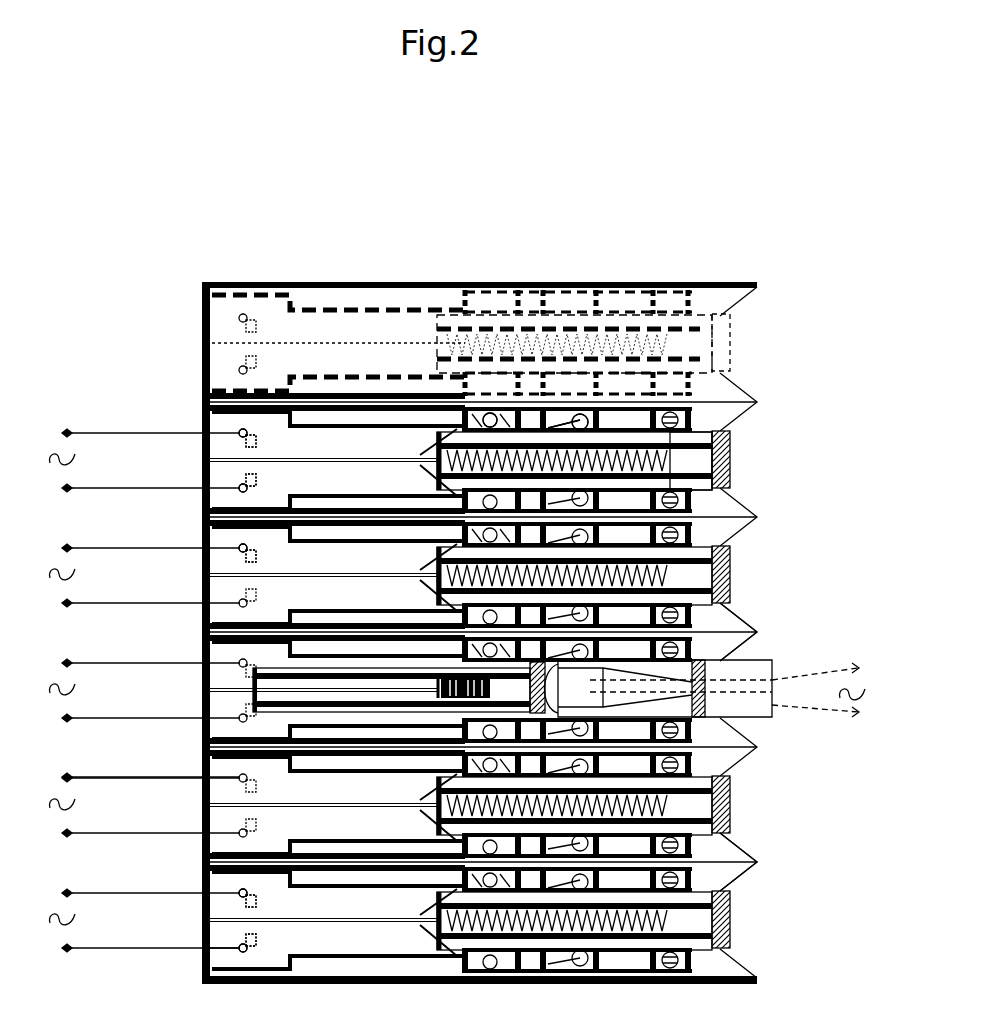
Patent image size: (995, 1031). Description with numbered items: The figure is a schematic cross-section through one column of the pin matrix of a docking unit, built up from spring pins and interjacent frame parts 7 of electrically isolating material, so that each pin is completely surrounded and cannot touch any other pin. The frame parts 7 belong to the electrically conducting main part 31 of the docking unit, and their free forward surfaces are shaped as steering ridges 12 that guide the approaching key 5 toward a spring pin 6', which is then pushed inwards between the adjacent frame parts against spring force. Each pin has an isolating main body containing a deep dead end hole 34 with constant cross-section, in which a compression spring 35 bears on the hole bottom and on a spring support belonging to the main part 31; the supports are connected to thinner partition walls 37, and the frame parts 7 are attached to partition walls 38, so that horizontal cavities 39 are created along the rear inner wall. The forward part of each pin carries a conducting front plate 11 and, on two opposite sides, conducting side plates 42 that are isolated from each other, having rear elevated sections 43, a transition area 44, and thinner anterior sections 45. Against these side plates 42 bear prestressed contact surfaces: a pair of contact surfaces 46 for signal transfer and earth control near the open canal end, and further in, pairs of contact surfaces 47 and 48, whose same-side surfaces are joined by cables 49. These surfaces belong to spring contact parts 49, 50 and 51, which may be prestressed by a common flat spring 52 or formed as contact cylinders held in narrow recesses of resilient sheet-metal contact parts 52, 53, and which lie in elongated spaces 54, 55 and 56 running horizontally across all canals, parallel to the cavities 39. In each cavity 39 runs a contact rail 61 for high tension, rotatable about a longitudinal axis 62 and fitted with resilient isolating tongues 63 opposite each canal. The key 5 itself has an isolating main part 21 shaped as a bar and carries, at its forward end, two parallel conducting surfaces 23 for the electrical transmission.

The key 5 is at (775, 727).
The spring pin 6' is at (176, 759).
The interjacent frame part 7 is at (692, 541).
The front plate 11 is at (688, 458).
The steering ridge 12 is at (735, 963).
The main part of the key 21 is at (730, 697).
The electrically conducting surfaces 23 is at (705, 668).
The main part of the docking unit 31 is at (300, 285).
The dead end hole 34 is at (420, 805).
The compression spring 35 is at (623, 445).
The partition wall 37 is at (230, 460).
The partition wall 38 is at (232, 510).
The horizontal cavity 39 is at (234, 540).
The side plate 42 is at (548, 396).
The elevated section 43 is at (467, 404).
The transition area 44 is at (488, 405).
The anterior thinner section 45 is at (513, 400).
The contact surface 46 is at (730, 444).
The contact surface 47 is at (600, 428).
The contact surface 48 is at (470, 404).
The cable 49 is at (567, 425).
The spring contact part 50 is at (300, 574).
The spring contact part 51 is at (212, 737).
The flat spring 52 is at (240, 622).
The sheet-metal contact part 53 is at (692, 530).
The elongated space 54 is at (722, 580).
The elongated space 55 is at (583, 418).
The elongated space 56 is at (462, 403).
The contact rail 61 is at (243, 938).
The longitudinal axis 62 is at (240, 945).
The resilient tongue 63 is at (265, 890).